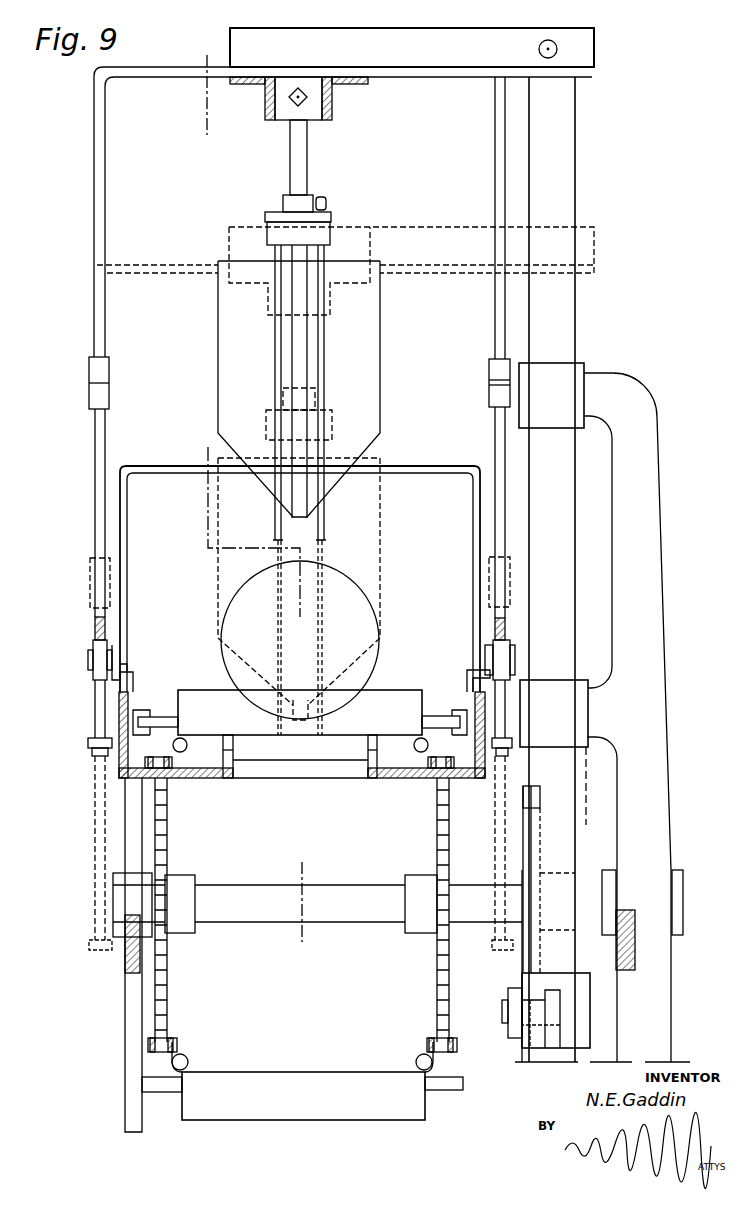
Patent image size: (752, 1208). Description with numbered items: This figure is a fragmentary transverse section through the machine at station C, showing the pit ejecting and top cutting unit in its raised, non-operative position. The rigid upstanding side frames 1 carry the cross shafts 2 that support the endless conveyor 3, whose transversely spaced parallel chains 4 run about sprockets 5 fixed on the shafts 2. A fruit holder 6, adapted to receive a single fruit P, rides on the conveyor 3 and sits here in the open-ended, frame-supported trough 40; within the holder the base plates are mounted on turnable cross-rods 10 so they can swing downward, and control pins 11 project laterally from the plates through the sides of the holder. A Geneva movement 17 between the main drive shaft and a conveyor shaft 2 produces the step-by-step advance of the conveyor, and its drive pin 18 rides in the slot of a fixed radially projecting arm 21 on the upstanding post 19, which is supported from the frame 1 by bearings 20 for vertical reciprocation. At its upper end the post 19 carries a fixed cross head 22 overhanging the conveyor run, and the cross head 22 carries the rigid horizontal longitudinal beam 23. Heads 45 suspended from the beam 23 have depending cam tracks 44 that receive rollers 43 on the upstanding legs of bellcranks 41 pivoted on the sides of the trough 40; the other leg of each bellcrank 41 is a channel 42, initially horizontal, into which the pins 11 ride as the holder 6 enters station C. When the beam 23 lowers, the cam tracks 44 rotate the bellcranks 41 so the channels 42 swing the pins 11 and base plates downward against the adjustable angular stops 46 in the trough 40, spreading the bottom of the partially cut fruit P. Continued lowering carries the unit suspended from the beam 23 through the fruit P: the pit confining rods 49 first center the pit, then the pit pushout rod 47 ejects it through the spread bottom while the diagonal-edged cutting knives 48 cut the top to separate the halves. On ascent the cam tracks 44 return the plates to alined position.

The side frames 1 is at (130, 963).
The cross shafts 2 is at (377, 900).
The endless conveyor 3 is at (177, 1040).
The chains 4 is at (450, 757).
The sprockets 5 is at (448, 830).
The fruit holder 6 is at (386, 690).
The cross-rods 10 is at (255, 504).
The control pins 11 is at (165, 722).
The Geneva movement 17 is at (525, 840).
The drive pin 18 is at (503, 1012).
The upstanding post 19 is at (560, 180).
The bearings 20 is at (568, 377).
The radially projecting arm 21 is at (517, 993).
The cross head 22 is at (450, 62).
The longitudinal beam 23 is at (332, 107).
The trough 40 is at (417, 778).
The bellcranks 41 is at (116, 660).
The channel 42 is at (142, 716).
The roller 43 is at (510, 650).
The cam tracks 44 is at (98, 628).
The heads 45 is at (95, 388).
The stops 46 is at (388, 750).
The pit pushout rod 47 is at (300, 507).
The cutting knives 48 is at (365, 392).
The pit confining rods 49 is at (278, 364).
The fruit P is at (362, 602).